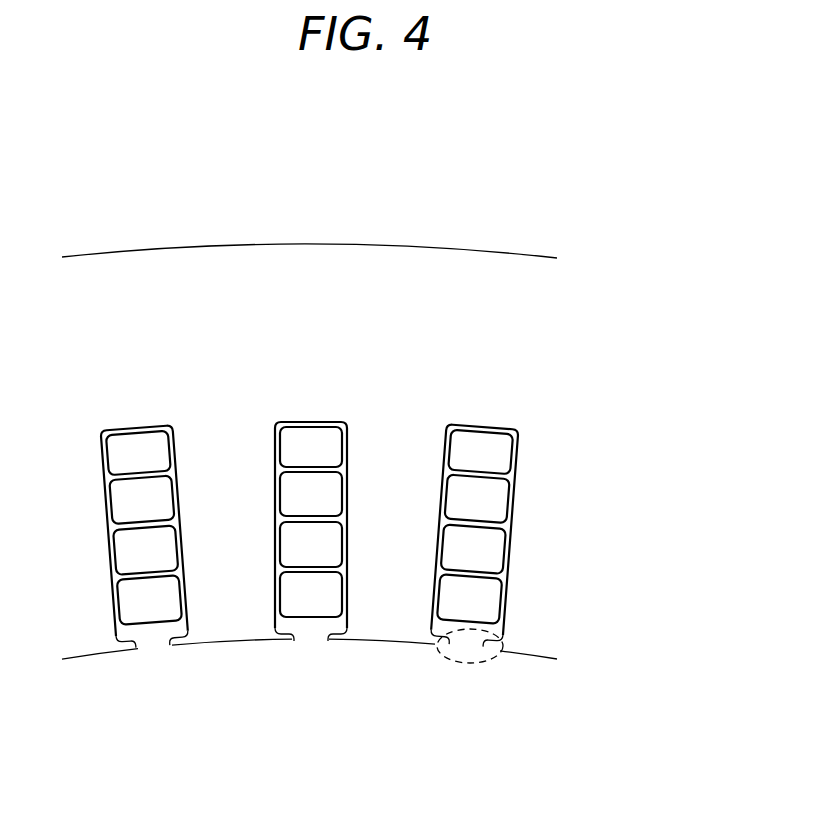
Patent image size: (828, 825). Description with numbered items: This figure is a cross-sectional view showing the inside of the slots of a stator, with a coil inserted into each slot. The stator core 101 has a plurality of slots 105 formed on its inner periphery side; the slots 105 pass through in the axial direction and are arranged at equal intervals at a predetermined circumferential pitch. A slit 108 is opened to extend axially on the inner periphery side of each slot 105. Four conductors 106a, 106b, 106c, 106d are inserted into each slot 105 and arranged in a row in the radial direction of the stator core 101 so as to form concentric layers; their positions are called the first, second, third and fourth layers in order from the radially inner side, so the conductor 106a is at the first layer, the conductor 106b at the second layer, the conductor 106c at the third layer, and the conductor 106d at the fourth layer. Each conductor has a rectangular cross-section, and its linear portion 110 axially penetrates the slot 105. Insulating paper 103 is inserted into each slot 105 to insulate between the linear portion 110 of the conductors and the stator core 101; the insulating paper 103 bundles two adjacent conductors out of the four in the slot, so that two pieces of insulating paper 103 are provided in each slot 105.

The stator core 101 is at (485, 270).
The insulating paper 103 is at (310, 487).
The slot 105 is at (315, 640).
The conductor 106a is at (493, 608).
The conductor 106b is at (493, 555).
The conductor 106c is at (492, 502).
The conductor 106d is at (498, 452).
The slit 108 is at (468, 664).
The linear portion 110 is at (307, 448).